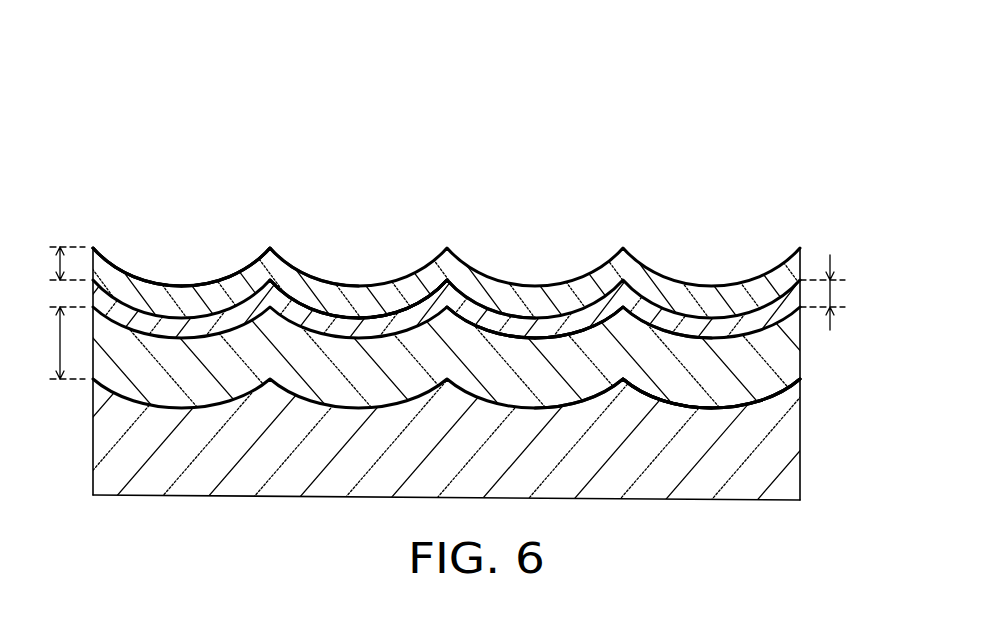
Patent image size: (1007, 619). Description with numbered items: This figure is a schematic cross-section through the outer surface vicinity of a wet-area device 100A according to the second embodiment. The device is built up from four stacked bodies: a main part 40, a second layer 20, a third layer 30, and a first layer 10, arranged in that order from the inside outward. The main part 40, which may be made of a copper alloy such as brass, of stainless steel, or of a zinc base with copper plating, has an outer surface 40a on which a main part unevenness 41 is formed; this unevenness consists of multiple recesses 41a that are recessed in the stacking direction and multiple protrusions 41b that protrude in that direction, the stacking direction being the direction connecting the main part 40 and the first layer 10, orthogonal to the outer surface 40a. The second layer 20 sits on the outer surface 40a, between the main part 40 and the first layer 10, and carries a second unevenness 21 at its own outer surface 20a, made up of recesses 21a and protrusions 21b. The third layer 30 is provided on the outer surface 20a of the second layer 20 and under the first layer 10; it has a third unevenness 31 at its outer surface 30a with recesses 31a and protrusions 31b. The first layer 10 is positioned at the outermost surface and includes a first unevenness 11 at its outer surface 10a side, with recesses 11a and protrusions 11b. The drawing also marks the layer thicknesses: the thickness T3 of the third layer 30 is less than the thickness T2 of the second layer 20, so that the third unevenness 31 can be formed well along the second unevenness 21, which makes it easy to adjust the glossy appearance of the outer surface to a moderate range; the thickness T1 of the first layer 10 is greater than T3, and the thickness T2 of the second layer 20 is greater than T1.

The wet-area device 100A is at (772, 73).
The first layer 10 is at (445, 220).
The outer surface of the first layer 10a is at (157, 282).
The first unevenness 11 is at (216, 201).
The recesses of the first unevenness 11a is at (183, 284).
The protrusions of the first unevenness 11b is at (270, 248).
The third layer 30 is at (451, 237).
The outer surface of the third layer 30a is at (328, 314).
The third unevenness 31 is at (358, 262).
The recesses of the third unevenness 31a is at (367, 318).
The protrusions of the third unevenness 31b is at (447, 217).
The second layer 20 is at (450, 265).
The outer surface of the second layer 20a is at (508, 333).
The second unevenness 21 is at (535, 272).
The recesses of the second unevenness 21a is at (538, 337).
The protrusions of the second unevenness 21b is at (623, 227).
The main part 40 is at (488, 339).
The outer surface of the main part 40a is at (745, 404).
The main part unevenness 41 is at (711, 307).
The recesses of the main part unevenness 41a is at (680, 406).
The protrusions of the main part unevenness 41b is at (640, 283).
The thickness of the first layer T1 is at (53, 263).
The thickness of the second layer T2 is at (53, 343).
The thickness of the third layer T3 is at (836, 292).